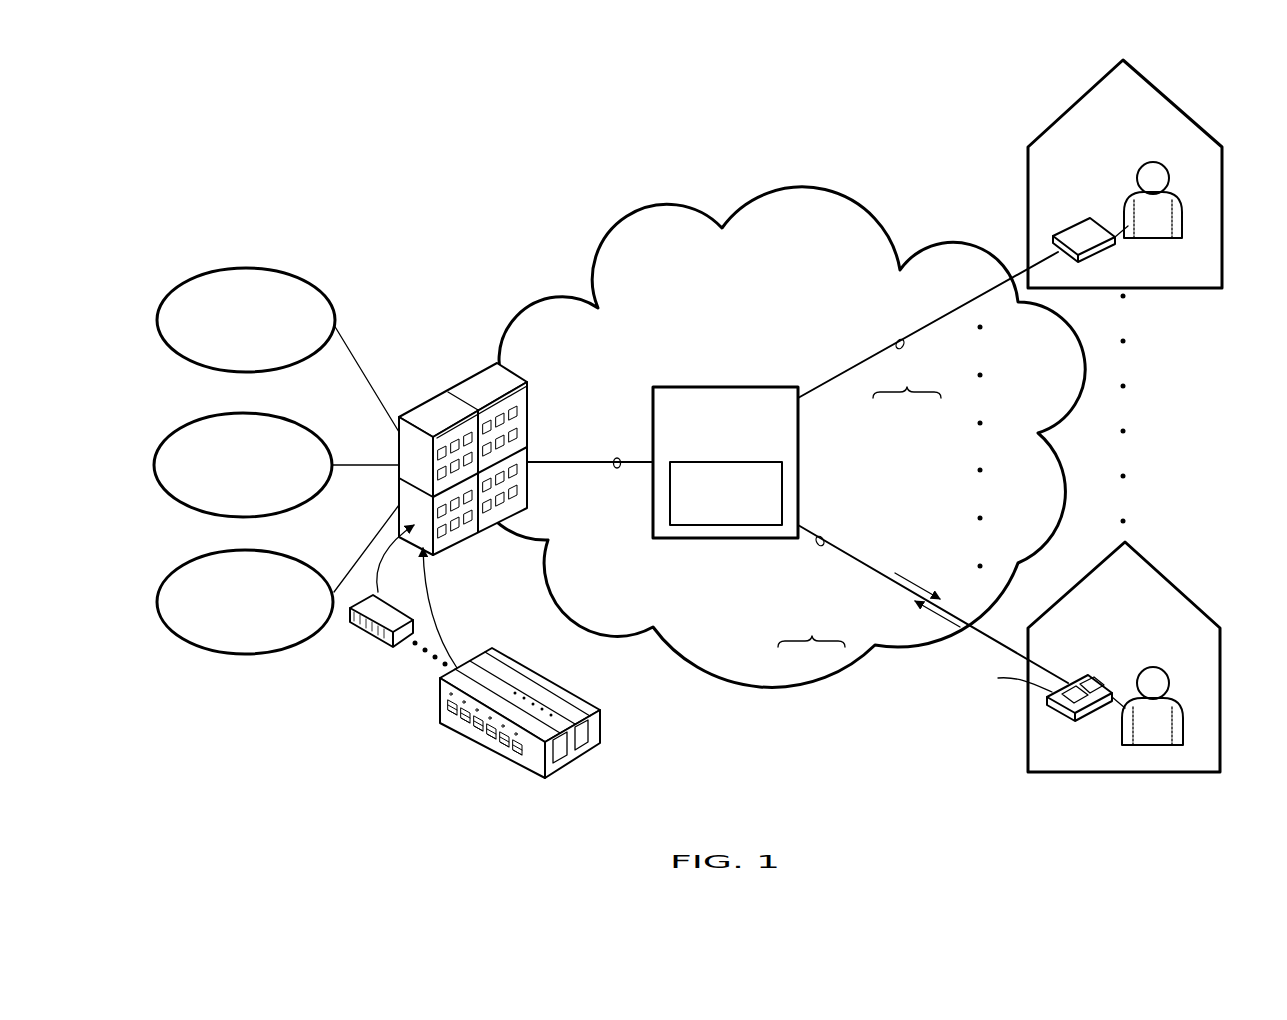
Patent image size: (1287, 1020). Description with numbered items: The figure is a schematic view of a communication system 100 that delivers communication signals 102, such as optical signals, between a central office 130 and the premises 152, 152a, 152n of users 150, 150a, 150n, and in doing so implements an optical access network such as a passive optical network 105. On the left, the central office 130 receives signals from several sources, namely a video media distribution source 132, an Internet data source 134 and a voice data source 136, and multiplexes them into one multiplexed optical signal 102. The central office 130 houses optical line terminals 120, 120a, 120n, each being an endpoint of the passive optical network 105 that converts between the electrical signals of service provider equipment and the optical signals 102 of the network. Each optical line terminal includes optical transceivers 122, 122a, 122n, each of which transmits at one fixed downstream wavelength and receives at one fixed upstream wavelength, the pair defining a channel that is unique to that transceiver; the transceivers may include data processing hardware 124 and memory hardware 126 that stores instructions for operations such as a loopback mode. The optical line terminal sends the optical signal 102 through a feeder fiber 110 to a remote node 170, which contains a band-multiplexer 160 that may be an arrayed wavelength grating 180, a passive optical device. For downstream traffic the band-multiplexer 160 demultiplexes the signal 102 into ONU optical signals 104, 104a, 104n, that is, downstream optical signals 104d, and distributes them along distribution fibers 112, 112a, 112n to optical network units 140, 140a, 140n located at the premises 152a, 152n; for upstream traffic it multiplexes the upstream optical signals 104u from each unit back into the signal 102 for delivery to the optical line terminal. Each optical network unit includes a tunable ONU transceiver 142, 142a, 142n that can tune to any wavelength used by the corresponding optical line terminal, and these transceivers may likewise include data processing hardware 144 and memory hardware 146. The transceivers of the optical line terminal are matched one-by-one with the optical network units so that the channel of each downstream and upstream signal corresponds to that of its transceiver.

The communication system 100 is at (790, 116).
The communication signals 102 is at (616, 458).
The demultiplexed optical signals 104 is at (894, 352).
The ONU optical signal 104a is at (899, 338).
The ONU optical signal 104n is at (820, 547).
The downstream optical signals 104d is at (931, 585).
The upstream optical signals 104u is at (931, 621).
The passive optical network 105 is at (778, 437).
The feeder fiber 110 is at (560, 460).
The distribution fibers 112 is at (926, 335).
The distribution fiber 112a is at (856, 366).
The distribution fiber 112n is at (866, 562).
The optical line terminal 120 is at (512, 703).
The optical line terminal 120a is at (366, 637).
The optical line terminal 120n is at (529, 729).
The optical transceiver 122 is at (591, 674).
The optical transceiver 122a is at (482, 660).
The optical transceiver 122n is at (626, 733).
The data processing hardware 124 is at (560, 764).
The memory hardware 126 is at (588, 752).
The central office 130 is at (499, 366).
The video media distribution source 132 is at (226, 268).
The Internet data source 134 is at (226, 413).
The voice data source 136 is at (226, 550).
The optical network unit 140 is at (1080, 222).
The optical network unit 140a is at (1050, 244).
The optical network unit 140n is at (1089, 677).
The tunable ONU transceiver 142 is at (1043, 222).
The tunable ONU transceiver 142a is at (1043, 222).
The tunable ONU transceiver 142n is at (1047, 686).
The data processing hardware 144 is at (1046, 700).
The memory hardware 146 is at (1078, 652).
The users 150 is at (1148, 179).
The user 150a is at (1150, 160).
The user 150n is at (1147, 668).
The premises 152 is at (1115, 174).
The premises 152a is at (1192, 117).
The premises 152n is at (1193, 604).
The band-multiplexer 160 is at (726, 522).
The remote node 170 is at (723, 384).
The arrayed wavelength grating 180 is at (727, 526).